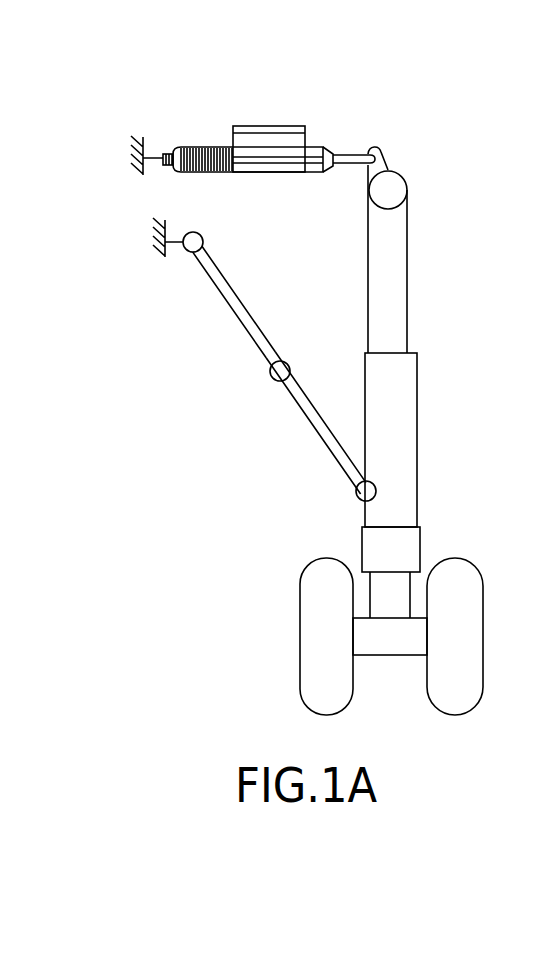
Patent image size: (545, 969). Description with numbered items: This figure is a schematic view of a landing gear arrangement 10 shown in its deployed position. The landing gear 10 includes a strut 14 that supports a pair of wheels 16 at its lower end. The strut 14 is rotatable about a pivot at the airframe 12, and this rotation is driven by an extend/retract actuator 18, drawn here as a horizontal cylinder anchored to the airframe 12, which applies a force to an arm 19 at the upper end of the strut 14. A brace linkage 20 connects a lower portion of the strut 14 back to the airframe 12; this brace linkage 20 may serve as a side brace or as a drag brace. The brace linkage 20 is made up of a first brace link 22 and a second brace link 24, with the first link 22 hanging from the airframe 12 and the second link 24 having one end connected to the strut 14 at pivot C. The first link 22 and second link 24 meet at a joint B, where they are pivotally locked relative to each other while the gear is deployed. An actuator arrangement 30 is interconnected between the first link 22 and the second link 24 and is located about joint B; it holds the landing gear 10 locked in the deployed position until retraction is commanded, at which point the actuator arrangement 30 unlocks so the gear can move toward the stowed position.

The landing gear arrangement 10 is at (290, 498).
The airframe 12 is at (136, 172).
The strut 14 is at (410, 444).
The wheels 16 is at (473, 682).
The extend/retract actuator 18 is at (287, 126).
The arm 19 is at (389, 164).
The brace linkage 20 is at (248, 334).
The first brace link 22 is at (222, 266).
The second brace link 24 is at (314, 407).
The actuator arrangement 30 is at (182, 426).
The joint B is at (271, 380).
The pivot C is at (359, 497).